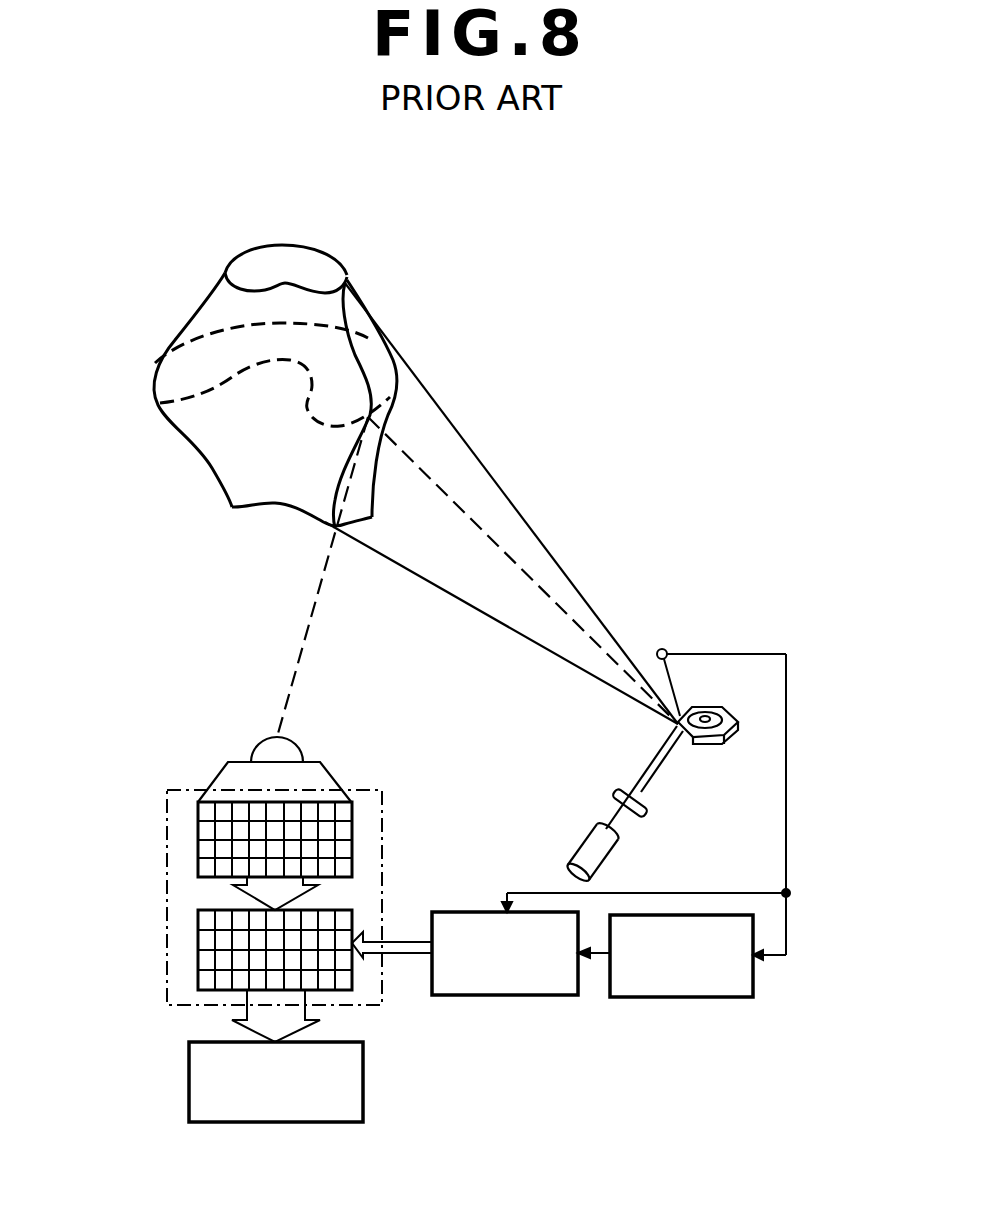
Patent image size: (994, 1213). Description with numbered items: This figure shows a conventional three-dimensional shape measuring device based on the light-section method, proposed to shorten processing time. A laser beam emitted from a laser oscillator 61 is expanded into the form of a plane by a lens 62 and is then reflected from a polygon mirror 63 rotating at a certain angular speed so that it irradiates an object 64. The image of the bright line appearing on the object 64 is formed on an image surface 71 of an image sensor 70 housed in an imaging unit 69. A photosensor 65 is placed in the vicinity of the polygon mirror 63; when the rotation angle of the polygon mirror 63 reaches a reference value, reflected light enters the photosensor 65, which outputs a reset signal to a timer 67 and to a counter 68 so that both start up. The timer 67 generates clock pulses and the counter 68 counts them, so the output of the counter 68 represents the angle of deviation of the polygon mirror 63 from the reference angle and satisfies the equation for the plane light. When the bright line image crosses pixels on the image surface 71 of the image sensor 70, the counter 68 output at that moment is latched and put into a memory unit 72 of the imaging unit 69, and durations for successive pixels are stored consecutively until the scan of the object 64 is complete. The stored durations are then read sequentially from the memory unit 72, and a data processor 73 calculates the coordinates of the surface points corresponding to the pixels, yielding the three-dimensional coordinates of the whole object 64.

The laser oscillator 61 is at (603, 843).
The lens 62 is at (648, 812).
The polygon mirror 63 is at (708, 744).
The object 64 is at (212, 468).
The photosensor 65 is at (662, 648).
The timer 67 is at (680, 998).
The counter 68 is at (510, 997).
The imaging unit 69 is at (382, 820).
The image sensor 70 is at (330, 772).
The image surface 71 is at (198, 827).
The memory unit 72 is at (198, 938).
The data processor 73 is at (189, 1072).